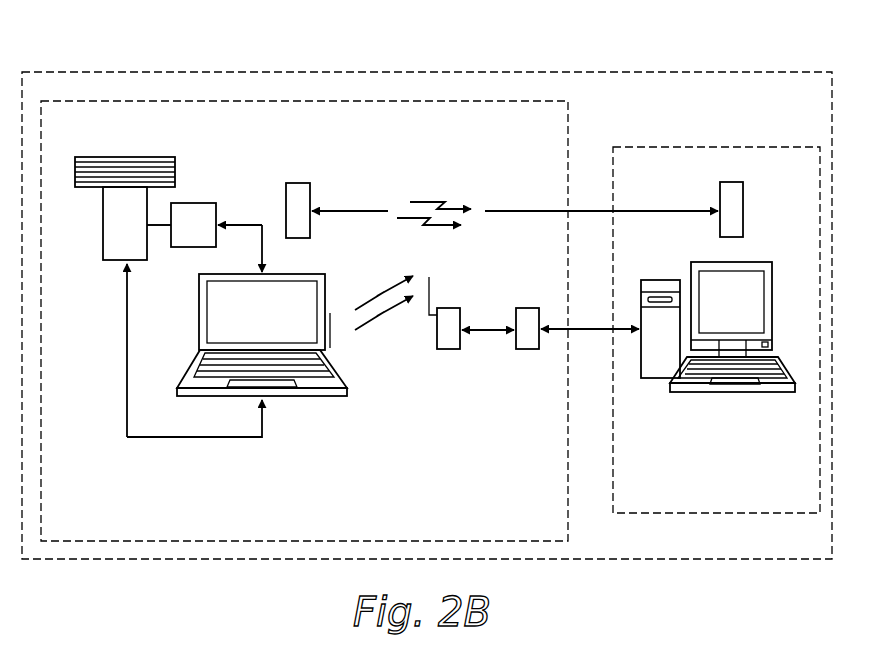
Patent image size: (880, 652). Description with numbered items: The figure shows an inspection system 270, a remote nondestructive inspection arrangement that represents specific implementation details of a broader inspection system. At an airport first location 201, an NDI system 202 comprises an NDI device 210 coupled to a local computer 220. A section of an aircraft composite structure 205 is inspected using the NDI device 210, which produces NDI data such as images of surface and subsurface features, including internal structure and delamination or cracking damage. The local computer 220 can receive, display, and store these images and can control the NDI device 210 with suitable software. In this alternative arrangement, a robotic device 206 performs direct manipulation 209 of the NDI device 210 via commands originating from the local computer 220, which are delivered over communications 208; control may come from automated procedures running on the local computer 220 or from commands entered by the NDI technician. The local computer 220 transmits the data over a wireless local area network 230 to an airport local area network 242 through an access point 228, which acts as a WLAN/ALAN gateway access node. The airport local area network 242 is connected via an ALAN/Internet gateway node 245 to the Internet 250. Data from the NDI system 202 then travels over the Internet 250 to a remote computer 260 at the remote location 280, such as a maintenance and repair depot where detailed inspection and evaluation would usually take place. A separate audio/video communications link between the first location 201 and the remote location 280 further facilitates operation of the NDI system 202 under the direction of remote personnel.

The inspection system 270 is at (778, 72).
The remote location 280 is at (755, 147).
The first location 201 is at (511, 147).
The aircraft composite structure 205 is at (160, 157).
The NDI device 210 is at (110, 262).
The robotic device 206 is at (199, 203).
The direct manipulation 209 is at (157, 226).
The communications 208 is at (264, 248).
The local computer 220 is at (307, 390).
The NDI system 202 is at (140, 457).
The wireless local area network 230 is at (393, 322).
The access point 228 is at (452, 308).
The ALAN/Internet gateway node 245 is at (528, 308).
The airport local area network 242 is at (490, 331).
The Internet 250 is at (583, 331).
The remote computer 260 is at (769, 393).